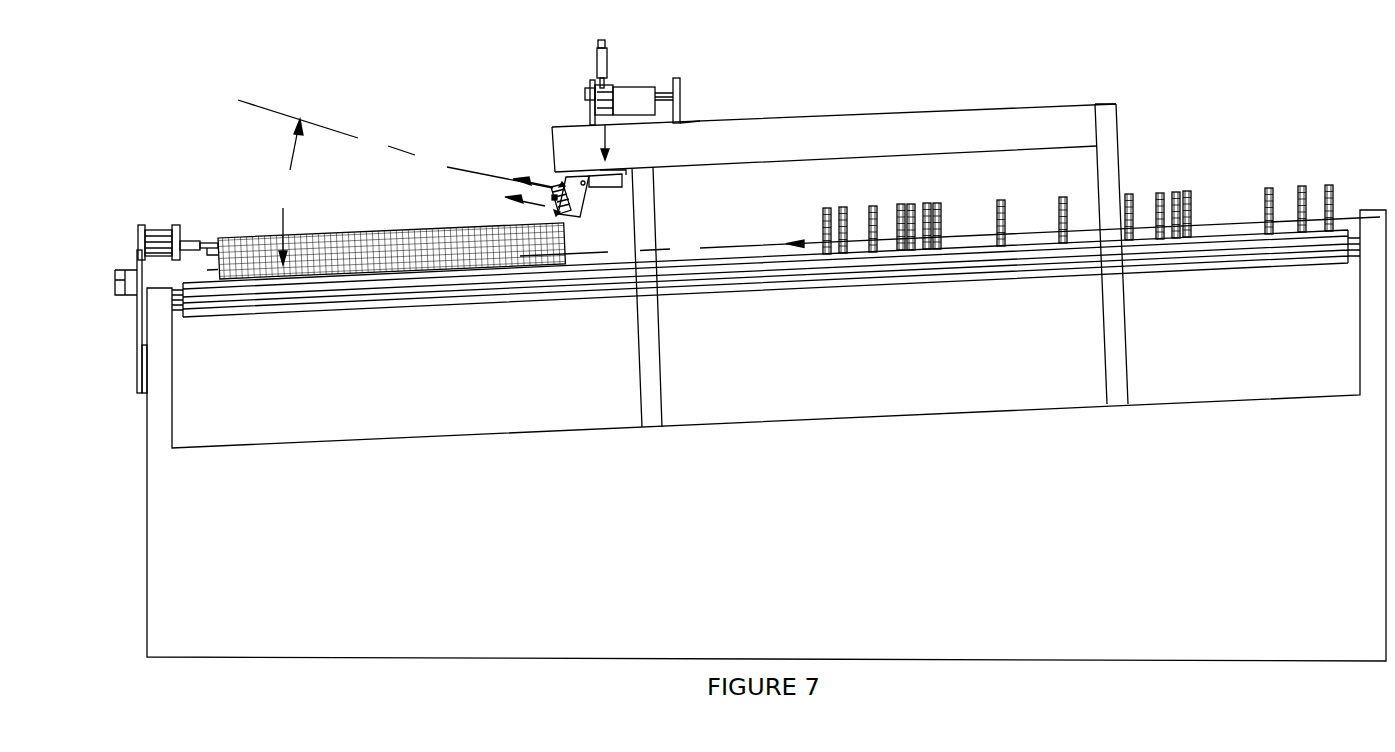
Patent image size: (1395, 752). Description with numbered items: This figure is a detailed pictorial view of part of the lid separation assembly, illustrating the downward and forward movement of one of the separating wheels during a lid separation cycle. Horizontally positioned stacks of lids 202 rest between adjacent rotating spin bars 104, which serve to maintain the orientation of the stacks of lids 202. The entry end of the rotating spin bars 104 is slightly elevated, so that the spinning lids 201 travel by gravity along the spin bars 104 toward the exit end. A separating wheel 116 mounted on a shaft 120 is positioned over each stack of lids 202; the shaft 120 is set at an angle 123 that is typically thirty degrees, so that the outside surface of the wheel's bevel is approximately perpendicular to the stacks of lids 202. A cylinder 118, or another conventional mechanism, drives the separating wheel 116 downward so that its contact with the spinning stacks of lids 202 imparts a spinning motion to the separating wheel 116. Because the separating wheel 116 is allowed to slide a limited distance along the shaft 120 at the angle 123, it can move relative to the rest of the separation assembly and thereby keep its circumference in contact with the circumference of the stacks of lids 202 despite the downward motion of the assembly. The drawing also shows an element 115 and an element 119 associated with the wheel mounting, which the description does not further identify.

The rotating spin bars 104 is at (742, 289).
The brush holder bracket 115 is at (565, 185).
The separating wheel 116 is at (560, 190).
The cylinder 118 is at (608, 63).
The pivot plate 119 is at (577, 202).
The shaft 120 is at (553, 202).
The angle 123 is at (395, 182).
The spinning lids 201 is at (1302, 183).
The stacks of lids 202 is at (228, 234).